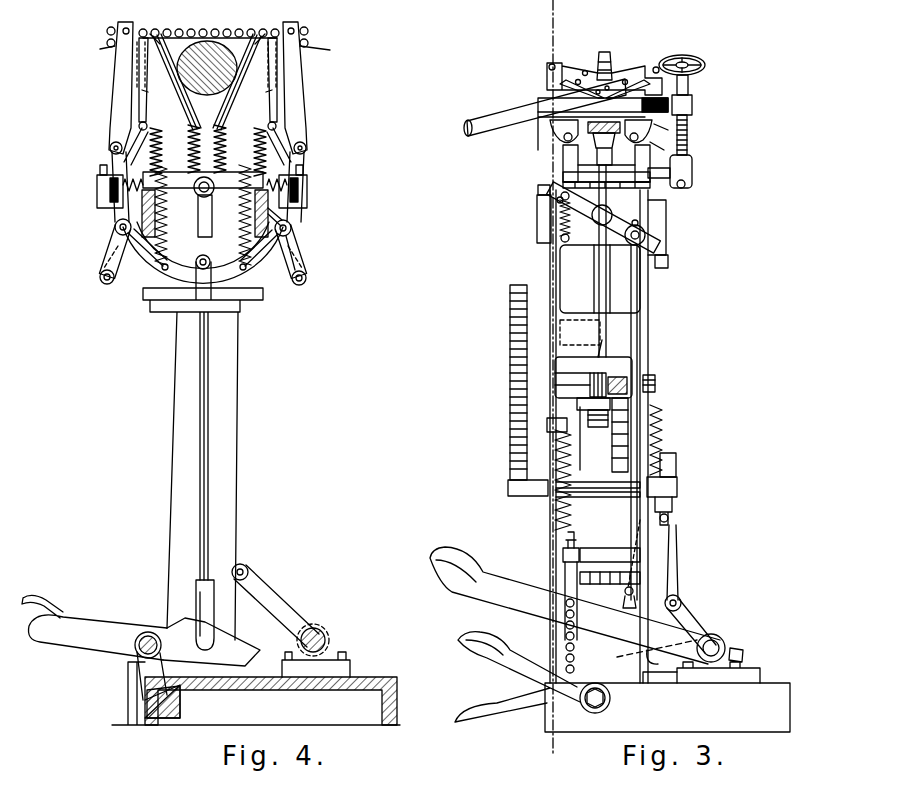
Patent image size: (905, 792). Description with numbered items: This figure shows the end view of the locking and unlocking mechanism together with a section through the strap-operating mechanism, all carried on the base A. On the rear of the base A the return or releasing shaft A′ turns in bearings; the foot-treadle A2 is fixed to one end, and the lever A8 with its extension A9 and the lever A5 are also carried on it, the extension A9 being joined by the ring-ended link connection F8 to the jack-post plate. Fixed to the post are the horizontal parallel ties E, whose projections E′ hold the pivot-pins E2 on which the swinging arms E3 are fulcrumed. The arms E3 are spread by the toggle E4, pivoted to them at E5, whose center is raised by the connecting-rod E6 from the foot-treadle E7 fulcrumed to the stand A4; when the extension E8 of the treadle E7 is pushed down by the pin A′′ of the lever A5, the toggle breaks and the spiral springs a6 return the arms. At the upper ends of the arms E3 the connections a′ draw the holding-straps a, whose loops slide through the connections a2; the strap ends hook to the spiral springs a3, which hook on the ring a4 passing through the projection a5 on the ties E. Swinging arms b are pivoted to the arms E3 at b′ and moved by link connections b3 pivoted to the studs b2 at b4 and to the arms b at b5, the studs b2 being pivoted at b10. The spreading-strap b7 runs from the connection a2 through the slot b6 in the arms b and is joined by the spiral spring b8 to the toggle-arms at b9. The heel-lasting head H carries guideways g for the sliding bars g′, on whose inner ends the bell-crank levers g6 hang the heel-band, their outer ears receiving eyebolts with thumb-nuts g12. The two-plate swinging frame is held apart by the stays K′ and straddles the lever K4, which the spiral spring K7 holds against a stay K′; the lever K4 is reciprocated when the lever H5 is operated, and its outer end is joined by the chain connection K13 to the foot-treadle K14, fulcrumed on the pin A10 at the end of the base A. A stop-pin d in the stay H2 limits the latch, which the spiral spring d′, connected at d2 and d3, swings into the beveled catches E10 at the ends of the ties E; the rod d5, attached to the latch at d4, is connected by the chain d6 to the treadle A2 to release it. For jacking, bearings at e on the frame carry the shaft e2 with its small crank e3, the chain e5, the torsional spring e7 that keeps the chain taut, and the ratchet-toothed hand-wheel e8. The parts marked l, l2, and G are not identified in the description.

In FIG. 4, the connection a′ is at (276, 30).
In FIG. 4, the slot b6 is at (208, 52).
In FIG. 4, the swinging arms E3 is at (302, 78).
In FIG. 4, the swinging arms b is at (204, 80).
In FIG. 4, the spreading-strap b7 is at (276, 104).
In FIG. 4, the projection a5 is at (172, 92).
In FIG. 4, the holding-straps a is at (232, 82).
In FIG. 4, the connection a2 is at (206, 65).
In FIG. 4, the pivot b5 is at (277, 124).
In FIG. 4, the pivot b′ is at (310, 144).
In FIG. 4, the link connections b3 is at (307, 152).
In FIG. 4, the pivot b4 is at (208, 152).
In FIG. 4, the spiral springs a3 is at (206, 149).
In FIG. 4, the cross bar l is at (203, 150).
In FIG. 4, the studs b2 is at (308, 176).
In FIG. 4, the pivot b10 is at (304, 178).
In FIG. 4, the horizontal parallel ties E is at (300, 228).
In FIG. 3, the horizontal parallel ties E is at (666, 226).
In FIG. 4, the spiral spring b8 is at (205, 215).
In FIG. 4, the ring a4 is at (214, 192).
In FIG. 4, the spiral springs a6 is at (284, 222).
In FIG. 4, the pivot E5 is at (291, 230).
In FIG. 4, the toggle E4 is at (246, 264).
In FIG. 3, the toggle E4 is at (630, 460).
In FIG. 4, the pivot-pins E2 is at (308, 280).
In FIG. 3, the pivot-pins E2 is at (604, 435).
In FIG. 4, the projections E′ is at (296, 286).
In FIG. 4, the connection point b9 is at (245, 272).
In FIG. 4, the connecting-rod E6 is at (210, 392).
In FIG. 4, the pin A′′ is at (245, 566).
In FIG. 4, the lever A5 is at (280, 606).
In FIG. 4, the return or releasing shaft A′ is at (326, 632).
In FIG. 3, the return or releasing shaft A′ is at (724, 642).
In FIG. 4, the foot-treadle E7 is at (60, 630).
In FIG. 4, the extension E8 is at (211, 642).
In FIG. 4, the stand A4 is at (140, 656).
In FIG. 4, the base A is at (256, 693).
In FIG. 3, the base A is at (667, 707).
In FIG. 3, the heel-lasting head H is at (730, 106).
In FIG. 3, the lever H5 is at (614, 60).
In FIG. 3, the stay H2 is at (694, 140).
In FIG. 3, the thumb-nuts g12 is at (564, 145).
In FIG. 3, the bell-crank levers g6 is at (546, 128).
In FIG. 3, the sliding bars g′ is at (601, 135).
In FIG. 3, the guideways g is at (662, 137).
In FIG. 3, the cross bar l2 is at (606, 170).
In FIG. 3, the connection point d2 is at (630, 608).
In FIG. 3, the beveled catches E10 is at (690, 266).
In FIG. 3, the spiral spring d′ is at (560, 204).
In FIG. 3, the connection point d3 is at (560, 240).
In FIG. 3, the stays K′ is at (598, 409).
In FIG. 3, the stop-pin d is at (640, 222).
In FIG. 3, the attachment point d4 is at (645, 238).
In FIG. 3, the box G is at (600, 279).
In FIG. 3, the hand-wheel e8 is at (519, 390).
In FIG. 3, the chain e5 is at (600, 372).
In FIG. 3, the rod d5 is at (639, 330).
In FIG. 3, the shaft e2 is at (606, 378).
In FIG. 3, the torsional spring e7 is at (628, 386).
In FIG. 3, the bearing location e is at (612, 380).
In FIG. 3, the small crank e3 is at (610, 404).
In FIG. 3, the spiral spring K7 is at (560, 498).
In FIG. 3, the link connection F8 is at (660, 532).
In FIG. 3, the lever K4 is at (563, 554).
In FIG. 3, the chain connection d6 is at (636, 588).
In FIG. 3, the extension A9 is at (682, 600).
In FIG. 3, the lever A8 is at (708, 624).
In FIG. 3, the foot-treadle A2 is at (575, 605).
In FIG. 3, the chain connection K13 is at (566, 634).
In FIG. 3, the foot-treadle K14 is at (492, 665).
In FIG. 3, the pin A10 is at (612, 698).